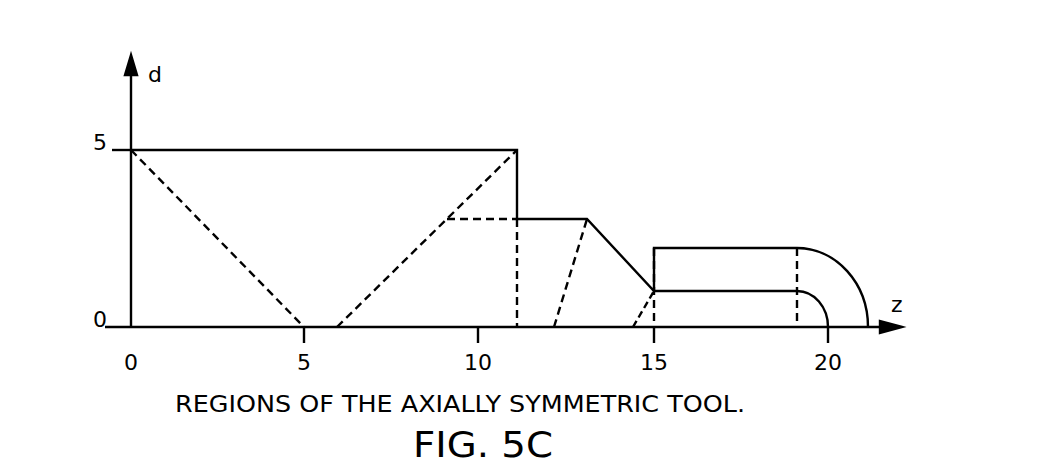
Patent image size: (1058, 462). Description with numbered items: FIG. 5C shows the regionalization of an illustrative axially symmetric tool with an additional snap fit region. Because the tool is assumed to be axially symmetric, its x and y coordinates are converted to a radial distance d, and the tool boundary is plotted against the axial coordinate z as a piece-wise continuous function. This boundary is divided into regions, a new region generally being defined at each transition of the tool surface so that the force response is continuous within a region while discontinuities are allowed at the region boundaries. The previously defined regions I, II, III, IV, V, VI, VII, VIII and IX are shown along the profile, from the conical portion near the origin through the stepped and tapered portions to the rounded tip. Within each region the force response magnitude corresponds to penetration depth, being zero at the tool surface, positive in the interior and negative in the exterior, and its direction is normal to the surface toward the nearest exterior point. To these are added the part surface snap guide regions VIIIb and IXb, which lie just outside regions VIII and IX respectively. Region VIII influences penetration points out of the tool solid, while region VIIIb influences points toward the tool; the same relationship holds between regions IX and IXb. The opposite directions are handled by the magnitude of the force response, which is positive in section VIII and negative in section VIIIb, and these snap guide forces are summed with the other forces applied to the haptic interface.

The region I is at (217, 238).
The region II is at (419, 238).
The region III is at (482, 204).
The region IV is at (486, 273).
The region V is at (566, 273).
The region VI is at (624, 287).
The region VII is at (646, 314).
The region VIII is at (727, 311).
The region VIIIb is at (728, 270).
The region IX is at (815, 320).
The region IXb is at (843, 278).